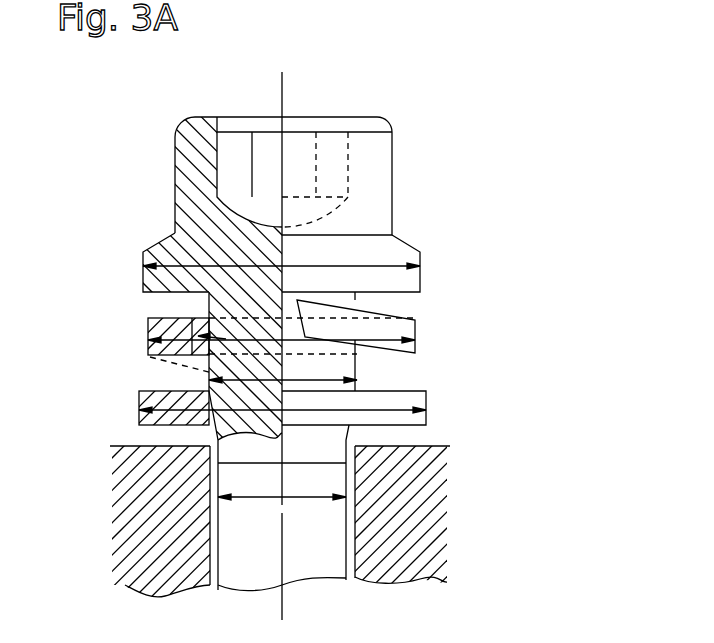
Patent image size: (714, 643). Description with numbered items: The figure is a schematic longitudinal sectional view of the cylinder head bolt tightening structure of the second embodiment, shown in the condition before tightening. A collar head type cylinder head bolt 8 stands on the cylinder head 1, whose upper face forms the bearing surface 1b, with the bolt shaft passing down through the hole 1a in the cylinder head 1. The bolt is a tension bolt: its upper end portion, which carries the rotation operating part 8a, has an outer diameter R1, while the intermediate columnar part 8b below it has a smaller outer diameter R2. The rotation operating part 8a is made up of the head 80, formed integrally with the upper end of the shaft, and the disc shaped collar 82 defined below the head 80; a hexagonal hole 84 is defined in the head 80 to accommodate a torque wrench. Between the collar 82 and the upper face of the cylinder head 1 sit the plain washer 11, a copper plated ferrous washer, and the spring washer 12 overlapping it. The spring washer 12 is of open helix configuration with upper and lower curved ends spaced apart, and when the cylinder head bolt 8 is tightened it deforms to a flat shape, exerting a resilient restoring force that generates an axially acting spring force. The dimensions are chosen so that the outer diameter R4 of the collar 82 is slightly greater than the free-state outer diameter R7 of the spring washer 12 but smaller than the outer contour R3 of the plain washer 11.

The cylinder head 1 is at (422, 469).
The through hole of body member 1a is at (347, 490).
The bearing surface 1b is at (153, 446).
The cylinder head bolt 8 is at (348, 538).
The rotation operating part 8a is at (309, 280).
The columnar part 8b is at (300, 568).
The head 80 is at (392, 176).
The collar 82 is at (420, 276).
The hexagonal hole 84 is at (221, 158).
The plain washer 11 is at (426, 421).
The spring washer 12 is at (420, 327).
The outer diameter of upper end portion R1 is at (320, 378).
The outer diameter of intermediate columnar part R2 is at (257, 498).
The outer contour of plain washer R3 is at (380, 408).
The outer diameter of collar R4 is at (353, 266).
The outer diameter of spring washer R7 is at (295, 337).